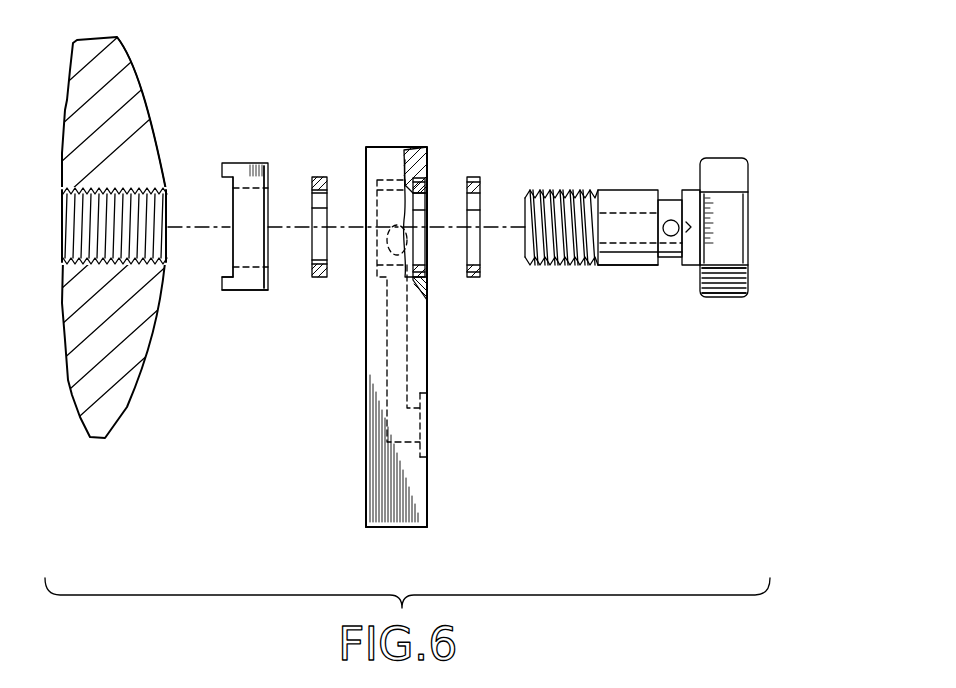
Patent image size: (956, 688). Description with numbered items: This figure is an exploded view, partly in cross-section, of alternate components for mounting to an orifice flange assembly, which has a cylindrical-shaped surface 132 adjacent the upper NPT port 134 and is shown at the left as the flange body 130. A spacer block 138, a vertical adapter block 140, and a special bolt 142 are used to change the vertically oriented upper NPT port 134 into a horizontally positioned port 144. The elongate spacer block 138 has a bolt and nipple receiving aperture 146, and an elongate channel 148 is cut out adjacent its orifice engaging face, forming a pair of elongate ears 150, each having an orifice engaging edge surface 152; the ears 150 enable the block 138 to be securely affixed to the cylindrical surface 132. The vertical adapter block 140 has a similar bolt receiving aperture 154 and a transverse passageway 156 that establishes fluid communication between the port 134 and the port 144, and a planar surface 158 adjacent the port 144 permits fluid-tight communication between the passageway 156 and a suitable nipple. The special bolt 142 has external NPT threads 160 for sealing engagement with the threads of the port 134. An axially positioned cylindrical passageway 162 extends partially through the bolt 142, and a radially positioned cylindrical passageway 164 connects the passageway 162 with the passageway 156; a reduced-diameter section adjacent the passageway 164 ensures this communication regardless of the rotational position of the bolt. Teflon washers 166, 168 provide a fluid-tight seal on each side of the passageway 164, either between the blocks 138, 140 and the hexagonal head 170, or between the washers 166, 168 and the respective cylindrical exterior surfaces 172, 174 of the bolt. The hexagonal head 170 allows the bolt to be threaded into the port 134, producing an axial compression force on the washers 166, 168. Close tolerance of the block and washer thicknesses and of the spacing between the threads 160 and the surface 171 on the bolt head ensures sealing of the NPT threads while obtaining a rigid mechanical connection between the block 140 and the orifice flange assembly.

The wall body 130 is at (118, 72).
The cylindrical-shaped surface 132 is at (147, 97).
The upper NPT port 134 is at (128, 230).
The spacer block 138 is at (250, 163).
The elongate channel 148 is at (230, 217).
The orifice engaging edge surface 152 is at (222, 288).
The elongate ear 150 is at (247, 290).
The bolt and nipple receiving aperture 146 is at (257, 237).
The Teflon washer 166 is at (322, 213).
The vertical adapter block 140 is at (428, 320).
The planar surface 158 is at (428, 490).
The transverse passageway 156 is at (397, 335).
The horizontally positioned port 144 is at (420, 410).
The bolt receiving aperture 154 is at (422, 213).
The Teflon washer 168 is at (483, 213).
The external NPT threads 160 is at (558, 192).
The axial cylindrical passageway 162 is at (608, 225).
The cylindrical exterior surface 172 is at (622, 268).
The radial cylindrical passageway 164 is at (671, 228).
The cylindrical exterior surface 174 is at (688, 268).
The hexagonal head 170 is at (727, 176).
The bolt head surface 171 is at (698, 285).
The special bolt 142 is at (638, 288).